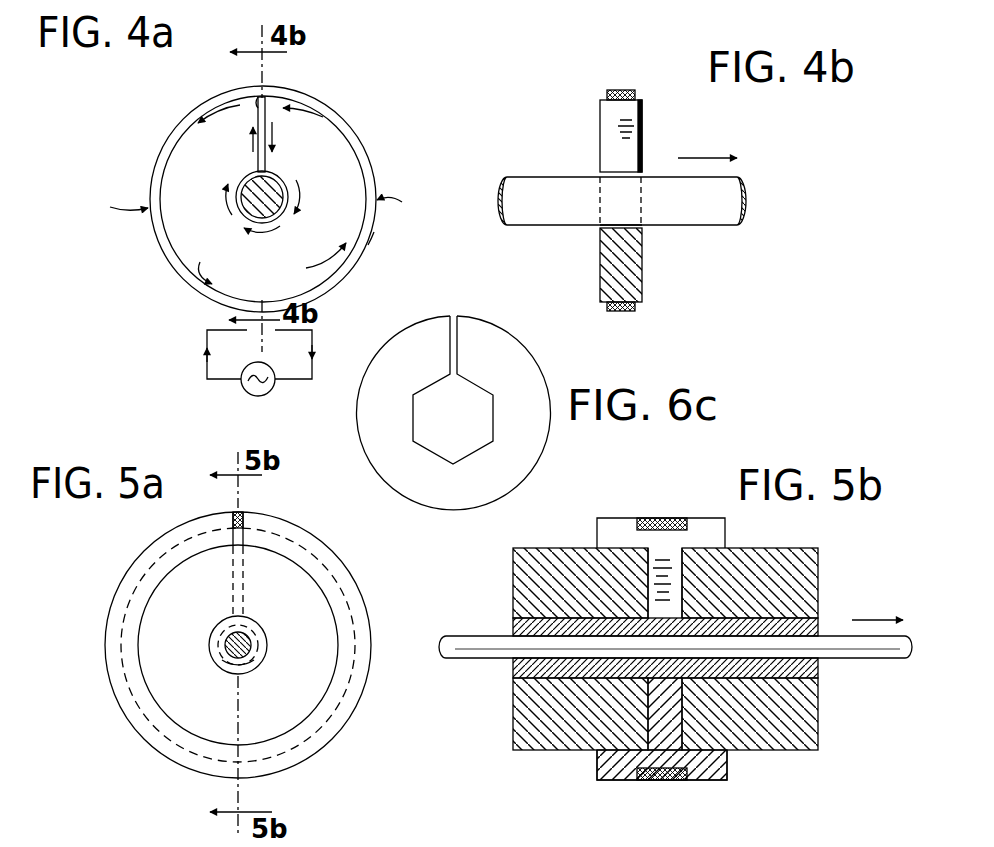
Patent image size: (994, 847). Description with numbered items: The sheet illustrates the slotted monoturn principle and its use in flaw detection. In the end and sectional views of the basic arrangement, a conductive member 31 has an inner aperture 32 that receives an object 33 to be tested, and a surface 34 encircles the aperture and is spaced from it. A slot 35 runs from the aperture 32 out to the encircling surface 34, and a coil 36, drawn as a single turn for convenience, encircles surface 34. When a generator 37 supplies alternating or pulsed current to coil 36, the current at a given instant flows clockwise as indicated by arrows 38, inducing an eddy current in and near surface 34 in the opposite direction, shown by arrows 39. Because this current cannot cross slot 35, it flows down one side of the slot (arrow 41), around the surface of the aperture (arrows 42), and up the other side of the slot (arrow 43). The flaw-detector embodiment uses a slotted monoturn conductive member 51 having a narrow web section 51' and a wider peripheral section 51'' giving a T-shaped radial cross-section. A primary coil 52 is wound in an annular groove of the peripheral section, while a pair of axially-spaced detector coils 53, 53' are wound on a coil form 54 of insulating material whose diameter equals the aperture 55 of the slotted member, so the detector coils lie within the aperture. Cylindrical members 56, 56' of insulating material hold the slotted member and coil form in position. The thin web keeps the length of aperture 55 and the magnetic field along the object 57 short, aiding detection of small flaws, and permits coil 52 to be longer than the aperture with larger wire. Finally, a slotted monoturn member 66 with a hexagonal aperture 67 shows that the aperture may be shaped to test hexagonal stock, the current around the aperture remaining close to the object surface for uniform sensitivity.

In FIG. 4a, the conductive member 31 is at (338, 153).
In FIG. 4b, the conductive member 31 is at (614, 260).
In FIG. 4a, the inner aperture 32 is at (273, 181).
In FIG. 4b, the inner aperture 32 is at (606, 226).
In FIG. 4a, the object 33 is at (247, 178).
In FIG. 4b, the object 33 is at (692, 212).
In FIG. 4a, the surface 34 is at (363, 172).
In FIG. 4b, the surface 34 is at (641, 100).
In FIG. 4a, the slot 35 is at (257, 106).
In FIG. 4b, the slot 35 is at (600, 143).
In FIG. 4a, the coil 36 is at (369, 239).
In FIG. 4b, the coil 36 is at (618, 90).
In FIG. 4a, the generator 37 is at (246, 394).
In FIG. 4a, the arrows 38 is at (257, 201).
In FIG. 4a, the arrows 39 is at (272, 194).
In FIG. 4a, the arrow 41 is at (274, 138).
In FIG. 4a, the arrows 42 is at (221, 196).
In FIG. 4a, the arrow 43 is at (250, 146).
In FIG. 5a, the slotted monoturn conductive member 51 is at (240, 645).
In FIG. 5b, the narrow web section 51' is at (665, 714).
In FIG. 5a, the wider peripheral section 51'' is at (272, 645).
In FIG. 5b, the wider peripheral section 51'' is at (648, 788).
In FIG. 5a, the primary coil 52 is at (279, 533).
In FIG. 5b, the primary coil 52 is at (665, 518).
In FIG. 5a, the detector coil 53 is at (267, 606).
In FIG. 5b, the detector coil 53 is at (639, 583).
In FIG. 5b, the detector coil 53' is at (697, 583).
In FIG. 5a, the coil form 54 is at (222, 625).
In FIG. 5b, the coil form 54 is at (807, 613).
In FIG. 5a, the aperture 55 is at (256, 662).
In FIG. 5b, the aperture 55 is at (663, 677).
In FIG. 5b, the cylindrical member 56 is at (549, 583).
In FIG. 5b, the cylindrical member 56' is at (780, 578).
In FIG. 5a, the object 57 is at (225, 644).
In FIG. 5b, the object 57 is at (850, 658).
In FIG. 6c, the slotted monoturn member 66 is at (493, 334).
In FIG. 6c, the hexagonal aperture 67 is at (462, 425).